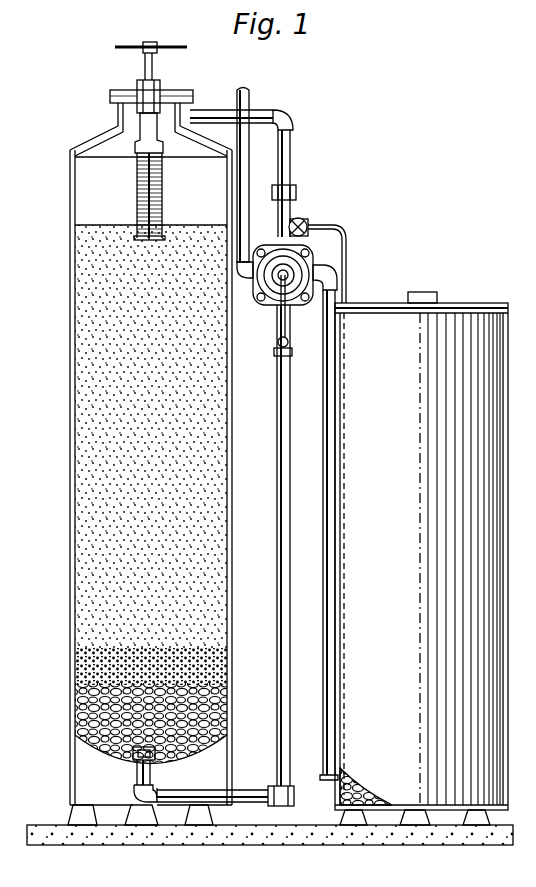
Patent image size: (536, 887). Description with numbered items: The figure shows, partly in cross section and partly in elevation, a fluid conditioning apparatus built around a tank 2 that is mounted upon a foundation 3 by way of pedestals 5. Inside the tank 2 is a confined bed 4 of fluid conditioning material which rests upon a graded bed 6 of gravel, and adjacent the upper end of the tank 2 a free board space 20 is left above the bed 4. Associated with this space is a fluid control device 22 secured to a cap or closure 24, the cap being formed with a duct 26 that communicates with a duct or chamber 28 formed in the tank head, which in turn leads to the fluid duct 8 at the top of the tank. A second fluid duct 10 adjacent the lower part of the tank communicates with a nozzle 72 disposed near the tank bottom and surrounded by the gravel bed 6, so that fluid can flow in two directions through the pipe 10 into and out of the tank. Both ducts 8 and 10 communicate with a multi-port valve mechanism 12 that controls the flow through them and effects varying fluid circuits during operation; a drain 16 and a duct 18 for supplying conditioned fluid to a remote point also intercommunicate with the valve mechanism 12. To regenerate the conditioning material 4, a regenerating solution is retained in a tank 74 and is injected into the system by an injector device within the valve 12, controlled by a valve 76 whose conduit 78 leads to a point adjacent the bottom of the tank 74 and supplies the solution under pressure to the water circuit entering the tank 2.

The tank 2 is at (233, 440).
The foundation 3 is at (86, 838).
The bed of fluid conditioning material 4 is at (82, 420).
The pedestals 5 is at (72, 812).
The graded bed of gravel 6 is at (68, 671).
The fluid duct 8 is at (256, 117).
The fluid duct 10 is at (182, 798).
The multi-port valve mechanism 12 is at (288, 300).
The drain 16 is at (324, 478).
The duct 18 is at (249, 95).
The free board space 20 is at (85, 186).
The fluid control device 22 is at (133, 150).
The cap or closure 24 is at (136, 92).
The duct 26 is at (160, 98).
The duct or chamber 28 is at (192, 104).
The nozzle 72 is at (132, 758).
The tank 74 is at (495, 381).
The valve 76 is at (305, 221).
The conduit 78 is at (347, 262).